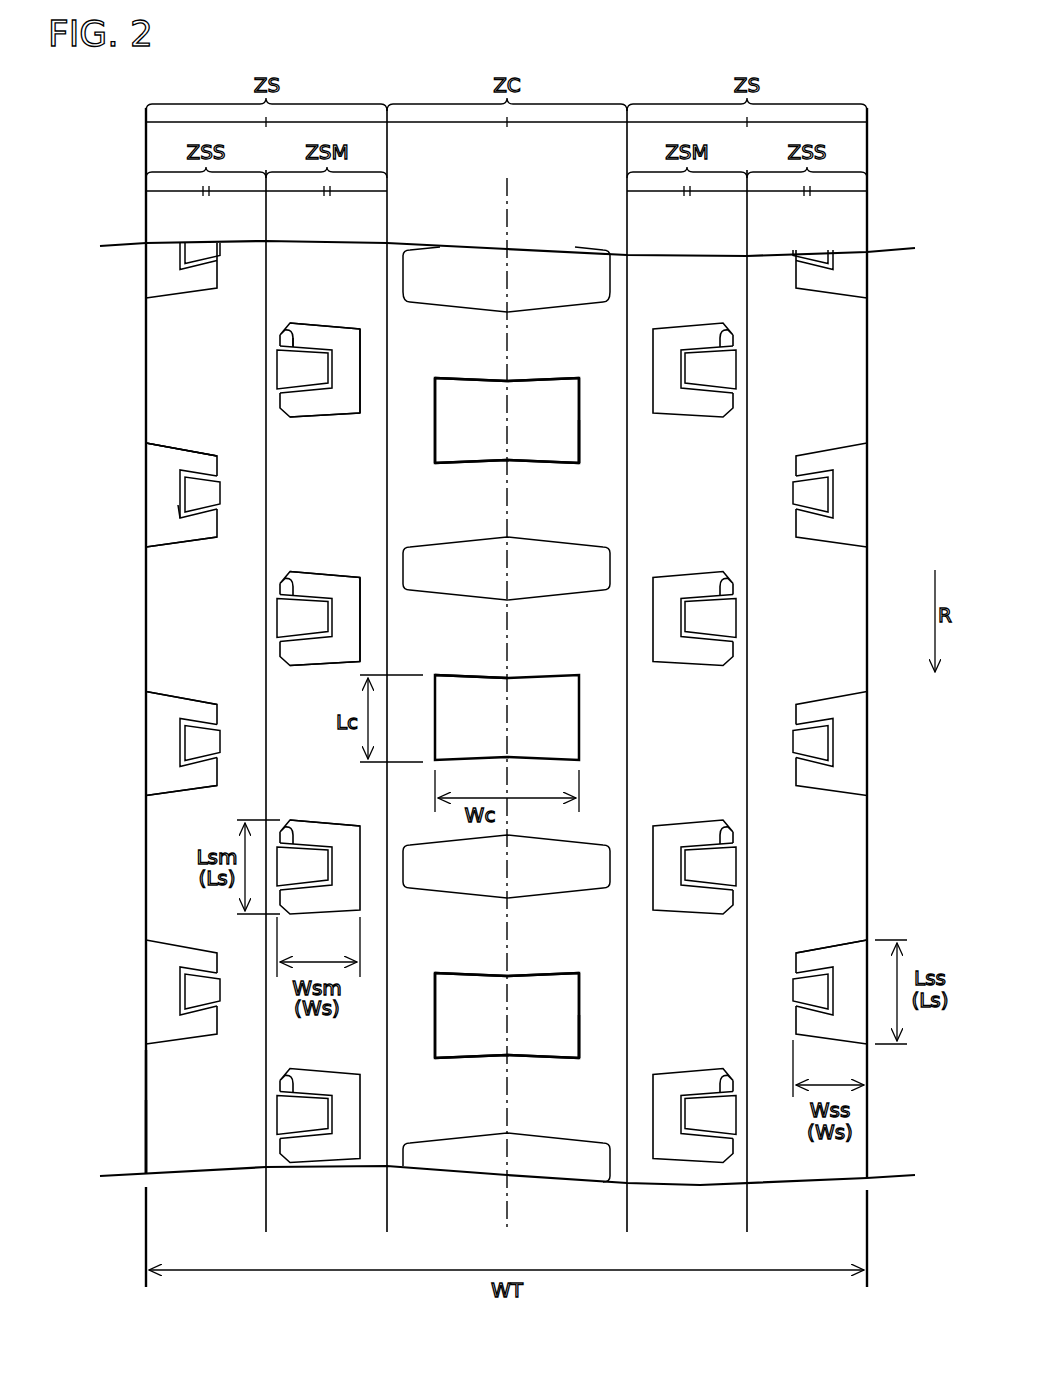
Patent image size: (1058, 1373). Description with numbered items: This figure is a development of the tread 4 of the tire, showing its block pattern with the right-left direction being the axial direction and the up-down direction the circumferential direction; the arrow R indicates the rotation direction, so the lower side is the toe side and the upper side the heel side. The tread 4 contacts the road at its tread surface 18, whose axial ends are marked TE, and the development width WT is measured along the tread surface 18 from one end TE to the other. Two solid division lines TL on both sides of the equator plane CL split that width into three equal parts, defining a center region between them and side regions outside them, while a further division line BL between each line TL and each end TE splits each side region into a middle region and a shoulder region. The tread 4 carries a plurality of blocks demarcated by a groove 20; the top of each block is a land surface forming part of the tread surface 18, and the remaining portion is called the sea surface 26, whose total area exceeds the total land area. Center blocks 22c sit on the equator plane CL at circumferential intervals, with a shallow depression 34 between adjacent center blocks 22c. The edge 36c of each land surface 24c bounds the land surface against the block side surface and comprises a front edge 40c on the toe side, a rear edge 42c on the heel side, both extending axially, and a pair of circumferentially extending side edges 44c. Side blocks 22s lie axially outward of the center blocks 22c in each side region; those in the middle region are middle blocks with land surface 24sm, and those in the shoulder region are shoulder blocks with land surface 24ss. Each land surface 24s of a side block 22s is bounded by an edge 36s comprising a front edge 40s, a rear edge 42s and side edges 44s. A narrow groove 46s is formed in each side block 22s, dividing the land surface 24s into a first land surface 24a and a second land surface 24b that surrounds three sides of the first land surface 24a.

The tread 4 is at (877, 245).
The tread surface 18 is at (138, 241).
The groove 20 is at (109, 1136).
The side block 22s is at (506, 703).
The center block 22c is at (555, 386).
The first land surface 24a is at (285, 364).
The second land surface 24b is at (157, 459).
The land surface of side block 24s is at (345, 337).
The land surface of center block 24c is at (477, 388).
The land surface of middle block 24sm is at (313, 820).
The land surface of shoulder block 24ss is at (835, 952).
The sea surface 26 is at (165, 1100).
The depression 34 is at (548, 552).
The edge of land surface of side block 36s is at (310, 418).
The edge of land surface of center block 36c is at (579, 440).
The front edge of side block 40s is at (310, 667).
The front edge of center block 40c is at (462, 463).
The rear edge of side block 42s is at (315, 575).
The rear edge of center block 42c is at (527, 380).
The side edge of side block 44s is at (358, 575).
The side edge of center block 44c is at (435, 400).
The narrow groove 46s is at (281, 330).
The end of tread surface TE is at (146, 480).
The division line BL is at (266, 215).
The division line TL is at (387, 147).
The equator plane CL is at (507, 1213).